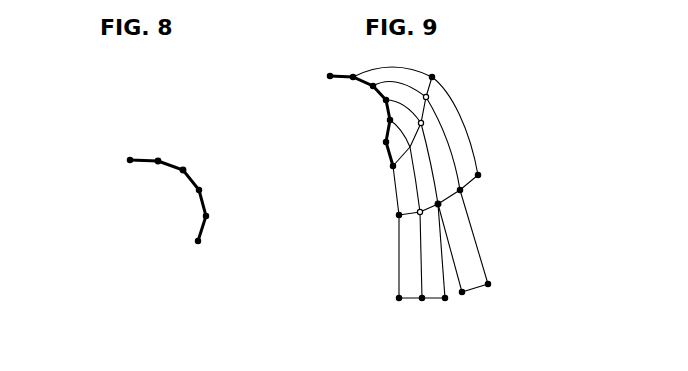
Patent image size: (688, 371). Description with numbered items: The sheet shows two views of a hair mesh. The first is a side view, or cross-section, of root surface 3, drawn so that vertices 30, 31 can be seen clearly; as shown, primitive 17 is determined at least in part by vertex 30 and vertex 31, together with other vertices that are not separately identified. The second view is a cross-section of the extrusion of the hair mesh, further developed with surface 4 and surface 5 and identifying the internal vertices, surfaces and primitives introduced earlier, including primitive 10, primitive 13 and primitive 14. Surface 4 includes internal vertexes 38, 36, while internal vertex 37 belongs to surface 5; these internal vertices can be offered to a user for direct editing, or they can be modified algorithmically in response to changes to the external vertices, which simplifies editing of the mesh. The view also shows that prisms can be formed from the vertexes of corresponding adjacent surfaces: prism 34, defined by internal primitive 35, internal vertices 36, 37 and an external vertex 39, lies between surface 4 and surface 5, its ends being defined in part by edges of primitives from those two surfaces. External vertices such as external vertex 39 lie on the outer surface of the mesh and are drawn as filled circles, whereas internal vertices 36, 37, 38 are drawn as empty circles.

In FIG. 8, the surface 3 is at (195, 173).
In FIG. 8, the primitive 17 is at (157, 160).
In FIG. 8, the vertex 30 is at (158, 160).
In FIG. 8, the vertex 31 is at (183, 168).
In FIG. 9, the surface 4 is at (403, 162).
In FIG. 9, the surface 5 is at (408, 220).
In FIG. 9, the primitive 10 is at (366, 242).
In FIG. 9, the primitive 13 is at (434, 306).
In FIG. 9, the primitive 14 is at (481, 298).
In FIG. 9, the prism 34 is at (435, 210).
In FIG. 9, the internal primitive 35 is at (450, 154).
In FIG. 9, the internal vertex 36 is at (423, 123).
In FIG. 9, the internal vertex 37 is at (418, 211).
In FIG. 9, the internal vertex 38 is at (428, 96).
In FIG. 9, the external vertex 39 is at (440, 204).